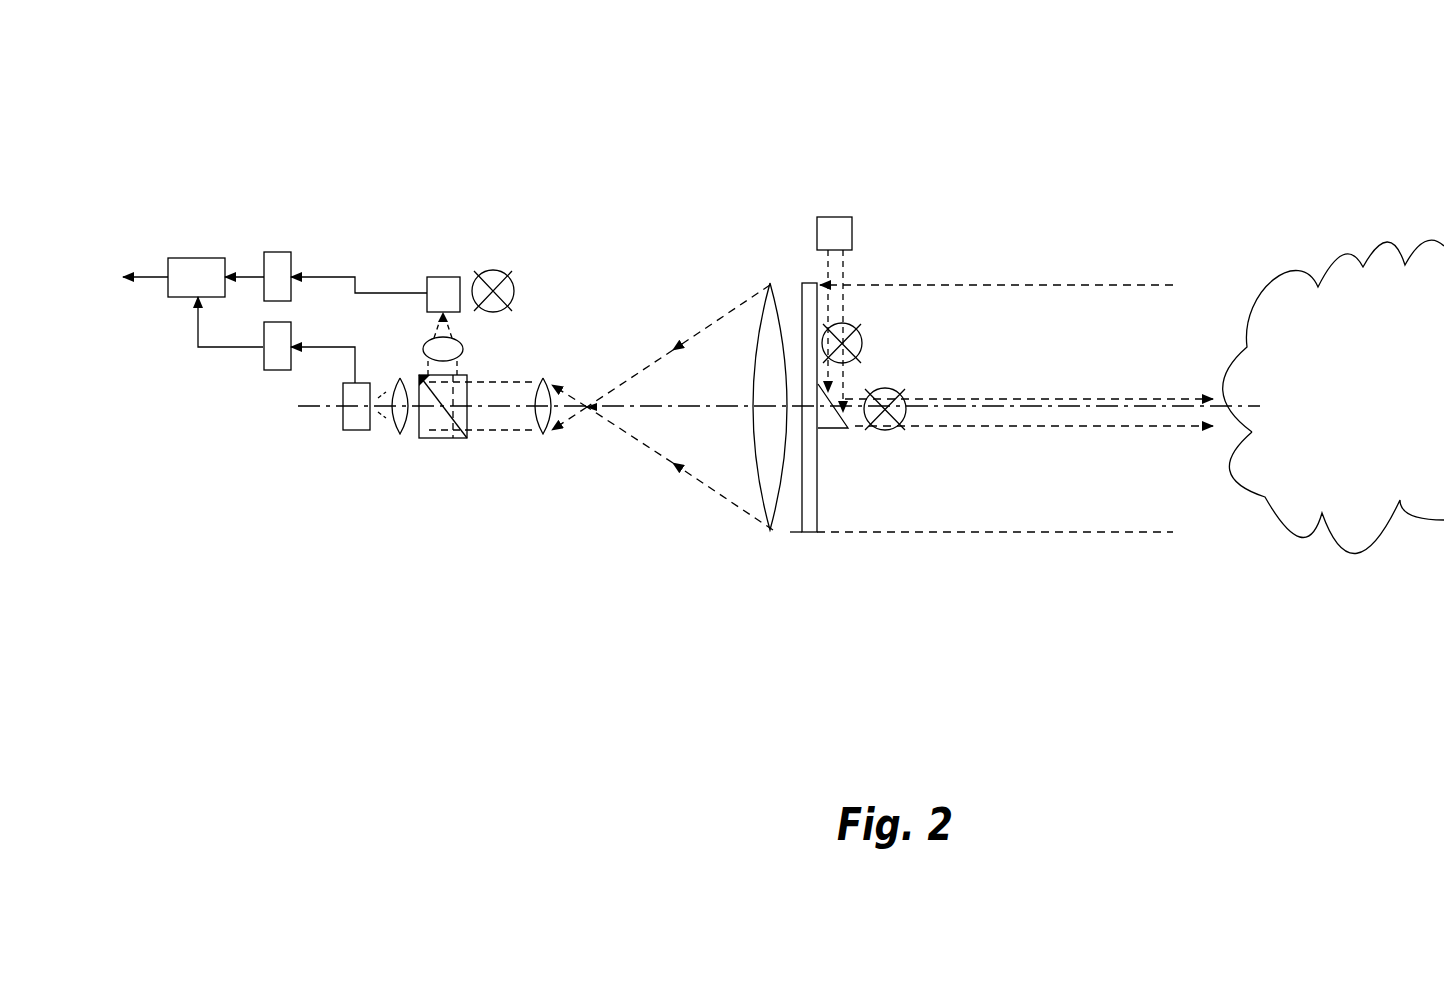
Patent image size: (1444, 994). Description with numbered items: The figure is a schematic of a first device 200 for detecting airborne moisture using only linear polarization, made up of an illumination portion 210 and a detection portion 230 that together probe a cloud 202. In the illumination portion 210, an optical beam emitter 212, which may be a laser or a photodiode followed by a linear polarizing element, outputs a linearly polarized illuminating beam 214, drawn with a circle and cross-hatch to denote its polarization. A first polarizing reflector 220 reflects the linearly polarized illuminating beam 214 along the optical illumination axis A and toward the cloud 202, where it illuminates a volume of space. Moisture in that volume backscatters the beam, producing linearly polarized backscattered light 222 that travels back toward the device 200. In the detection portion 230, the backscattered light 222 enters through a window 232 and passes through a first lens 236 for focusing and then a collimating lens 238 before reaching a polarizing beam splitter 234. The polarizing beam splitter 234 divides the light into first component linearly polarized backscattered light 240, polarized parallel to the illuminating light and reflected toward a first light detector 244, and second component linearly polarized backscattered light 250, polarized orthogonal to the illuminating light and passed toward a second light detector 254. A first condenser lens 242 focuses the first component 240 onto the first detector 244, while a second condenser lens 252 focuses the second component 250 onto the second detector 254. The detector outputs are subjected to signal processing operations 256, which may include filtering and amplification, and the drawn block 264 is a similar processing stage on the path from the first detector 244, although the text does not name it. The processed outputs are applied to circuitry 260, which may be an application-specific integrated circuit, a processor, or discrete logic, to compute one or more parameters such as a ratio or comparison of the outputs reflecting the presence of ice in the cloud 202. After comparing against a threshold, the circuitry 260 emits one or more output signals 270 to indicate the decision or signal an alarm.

The first device 200 is at (624, 66).
The cloud 202 is at (1355, 253).
The illumination portion 210 is at (867, 272).
The optical beam emitter 212 is at (842, 217).
The linearly polarized illuminating beam 214 is at (862, 332).
The first polarizing reflector 220 is at (830, 432).
The linearly polarized backscattered light 222 is at (1120, 285).
The detection portion 230 is at (515, 562).
The window 232 is at (812, 283).
The polarizing beam splitter 234 is at (458, 440).
The first lens 236 is at (755, 473).
The collimating lens 238 is at (533, 428).
The first component linearly polarized backscattered light 240 is at (463, 366).
The first condenser lens 242 is at (463, 339).
The first light detector 244 is at (452, 277).
The second component linearly polarized backscattered light 250 is at (405, 437).
The second condenser lens 252 is at (390, 436).
The second light detector 254 is at (351, 432).
The signal processing operations 256 is at (265, 372).
The circuitry 260 is at (205, 258).
The amplifier 264 is at (283, 252).
The output signals 270 is at (150, 277).